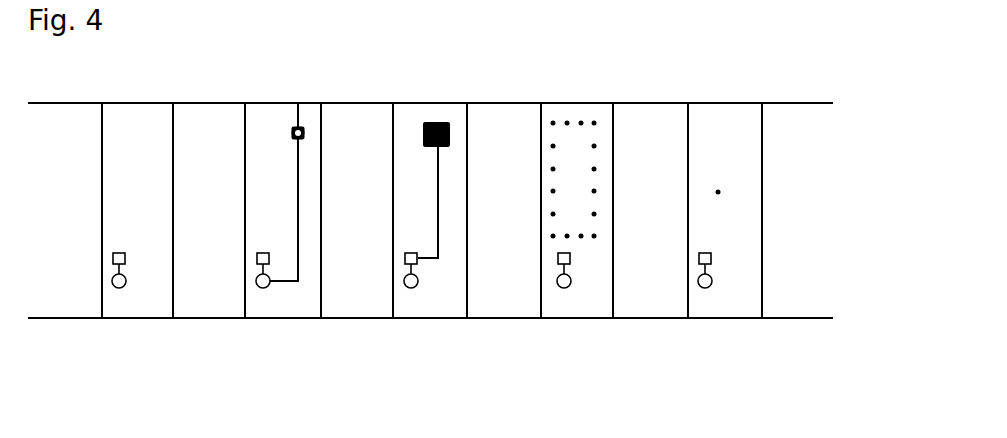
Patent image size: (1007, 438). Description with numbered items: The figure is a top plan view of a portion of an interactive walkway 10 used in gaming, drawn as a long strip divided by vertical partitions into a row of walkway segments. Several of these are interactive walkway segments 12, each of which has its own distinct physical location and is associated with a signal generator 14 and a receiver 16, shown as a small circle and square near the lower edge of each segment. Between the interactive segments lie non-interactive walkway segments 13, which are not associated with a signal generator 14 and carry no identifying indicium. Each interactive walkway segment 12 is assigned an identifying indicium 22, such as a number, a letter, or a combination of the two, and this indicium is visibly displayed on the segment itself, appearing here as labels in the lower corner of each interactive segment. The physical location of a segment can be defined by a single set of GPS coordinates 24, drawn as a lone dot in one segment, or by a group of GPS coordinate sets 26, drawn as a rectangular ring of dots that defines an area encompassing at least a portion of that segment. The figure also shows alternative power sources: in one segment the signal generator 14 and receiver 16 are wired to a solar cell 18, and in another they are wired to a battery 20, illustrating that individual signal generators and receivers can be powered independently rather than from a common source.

The interactive walkway 10 is at (502, 328).
The interactive walkway segment 12 is at (130, 119).
The non-interactive walkway segment 13 is at (212, 128).
The signal generator 14 is at (123, 291).
The receiver 16 is at (113, 258).
The solar cell 18 is at (298, 124).
The battery 20 is at (435, 118).
The identifying indicium 22 is at (157, 314).
The single set of GPS coordinates 24 is at (719, 183).
The group of GPS coordinate sets 26 is at (571, 115).